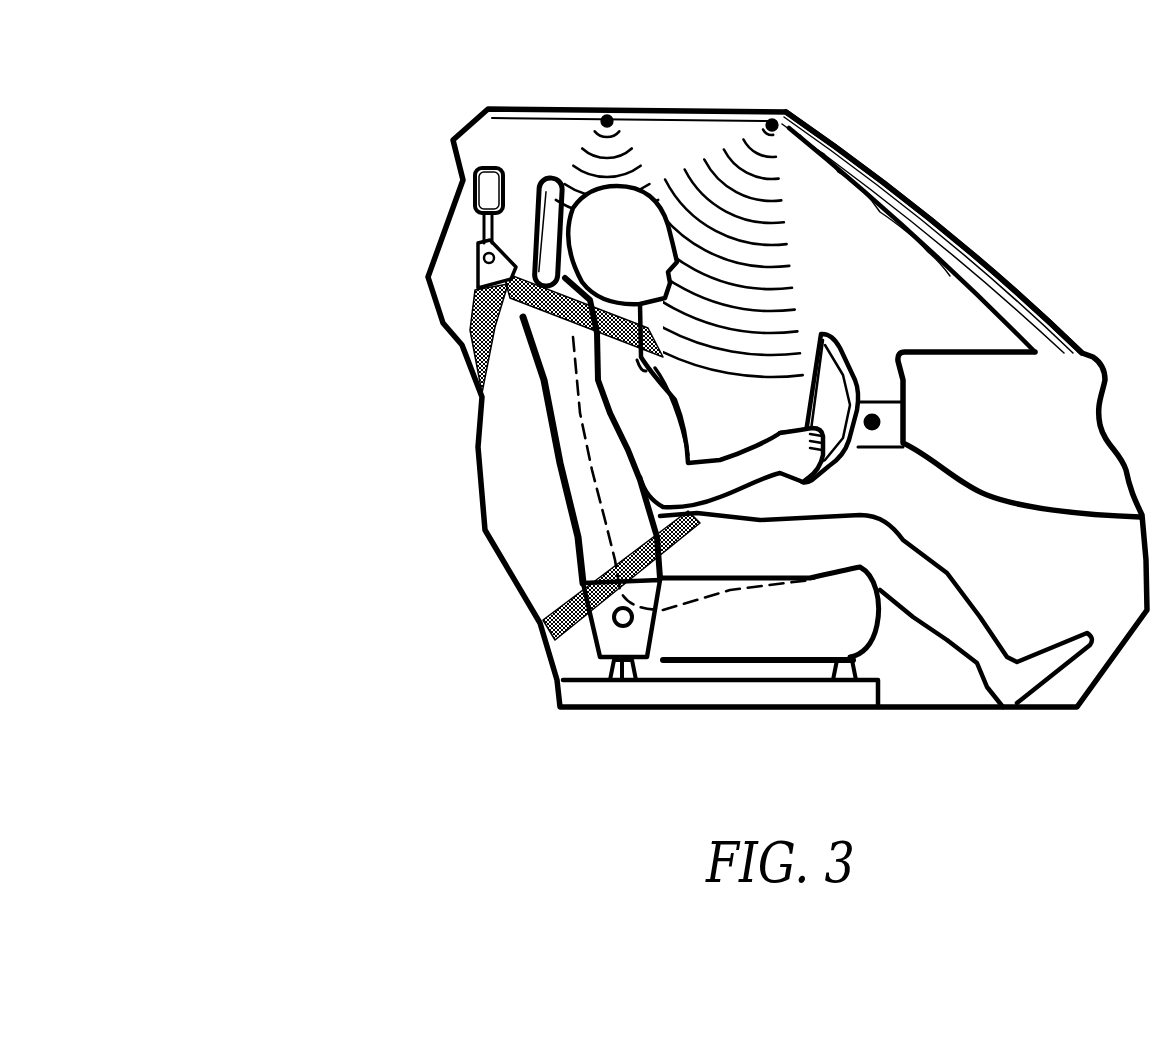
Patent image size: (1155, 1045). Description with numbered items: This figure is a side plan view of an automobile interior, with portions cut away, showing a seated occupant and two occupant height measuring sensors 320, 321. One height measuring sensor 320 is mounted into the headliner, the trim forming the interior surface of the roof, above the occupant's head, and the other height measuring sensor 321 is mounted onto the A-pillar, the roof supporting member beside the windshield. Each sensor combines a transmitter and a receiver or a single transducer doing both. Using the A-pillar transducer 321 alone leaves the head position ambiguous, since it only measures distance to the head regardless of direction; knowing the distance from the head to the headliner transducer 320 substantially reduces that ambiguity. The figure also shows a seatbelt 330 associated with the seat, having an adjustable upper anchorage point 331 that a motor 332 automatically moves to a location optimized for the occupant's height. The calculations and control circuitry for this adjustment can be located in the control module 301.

The control module 301 is at (975, 273).
The height measuring sensor 320 is at (772, 118).
The height measuring sensor 321 is at (607, 115).
The seatbelt 330 is at (463, 340).
The adjustable upper anchorage point 331 is at (480, 273).
The motor 332 is at (487, 190).